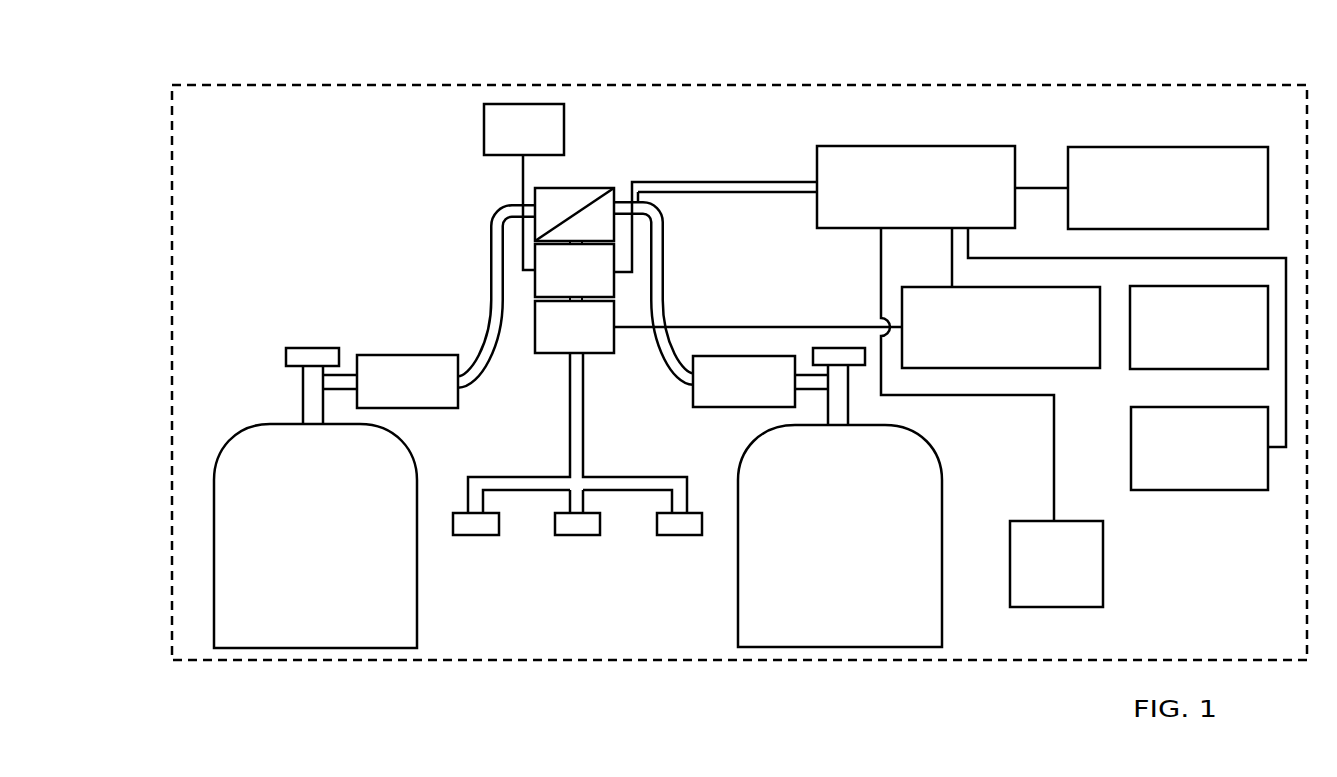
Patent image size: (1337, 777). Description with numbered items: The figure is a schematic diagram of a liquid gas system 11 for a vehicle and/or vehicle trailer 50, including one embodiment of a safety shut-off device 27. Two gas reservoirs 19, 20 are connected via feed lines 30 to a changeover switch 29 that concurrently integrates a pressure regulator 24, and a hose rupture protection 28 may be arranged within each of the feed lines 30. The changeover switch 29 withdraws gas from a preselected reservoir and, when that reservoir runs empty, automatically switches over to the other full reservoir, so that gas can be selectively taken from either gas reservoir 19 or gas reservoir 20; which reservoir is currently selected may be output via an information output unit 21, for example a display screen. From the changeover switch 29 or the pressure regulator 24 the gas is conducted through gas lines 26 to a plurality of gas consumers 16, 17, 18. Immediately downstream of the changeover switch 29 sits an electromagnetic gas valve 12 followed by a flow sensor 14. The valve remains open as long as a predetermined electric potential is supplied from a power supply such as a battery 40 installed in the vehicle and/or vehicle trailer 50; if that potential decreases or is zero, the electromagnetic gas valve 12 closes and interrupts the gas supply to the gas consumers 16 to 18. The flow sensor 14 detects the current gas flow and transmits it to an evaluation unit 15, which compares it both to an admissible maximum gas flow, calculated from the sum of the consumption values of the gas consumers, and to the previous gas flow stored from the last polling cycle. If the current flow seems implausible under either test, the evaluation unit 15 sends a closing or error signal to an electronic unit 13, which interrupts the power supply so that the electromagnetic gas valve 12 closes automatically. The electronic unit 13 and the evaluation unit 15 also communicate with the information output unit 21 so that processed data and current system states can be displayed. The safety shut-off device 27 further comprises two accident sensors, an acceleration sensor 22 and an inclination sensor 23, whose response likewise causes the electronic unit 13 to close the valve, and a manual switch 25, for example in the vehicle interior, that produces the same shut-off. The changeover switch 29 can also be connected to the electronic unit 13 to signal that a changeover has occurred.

The vehicle and/or vehicle trailer 50 is at (155, 82).
The liquid gas system 11 is at (283, 218).
The battery 40 is at (524, 187).
The changeover switch 29 is at (573, 215).
The pressure regulator 24 is at (578, 236).
The electromagnetic gas valve 12 is at (560, 284).
The flow sensor 14 is at (560, 340).
The electronic unit 13 is at (900, 199).
The information output unit 21 is at (1153, 199).
The evaluation unit 15 is at (985, 339).
The acceleration sensor 22 is at (1184, 339).
The inclination sensor 23 is at (1184, 460).
The manual switch 25 is at (1041, 575).
The hose rupture protection 28 is at (392, 395).
The gas reservoir 19 is at (300, 544).
The gas reservoir 20 is at (825, 544).
The safety shut-off device 27 is at (484, 212).
The feed lines 30 is at (497, 290).
The gas lines 26 is at (585, 432).
The gas consumer 16 is at (476, 537).
The gas consumer 17 is at (578, 537).
The gas consumer 18 is at (678, 537).